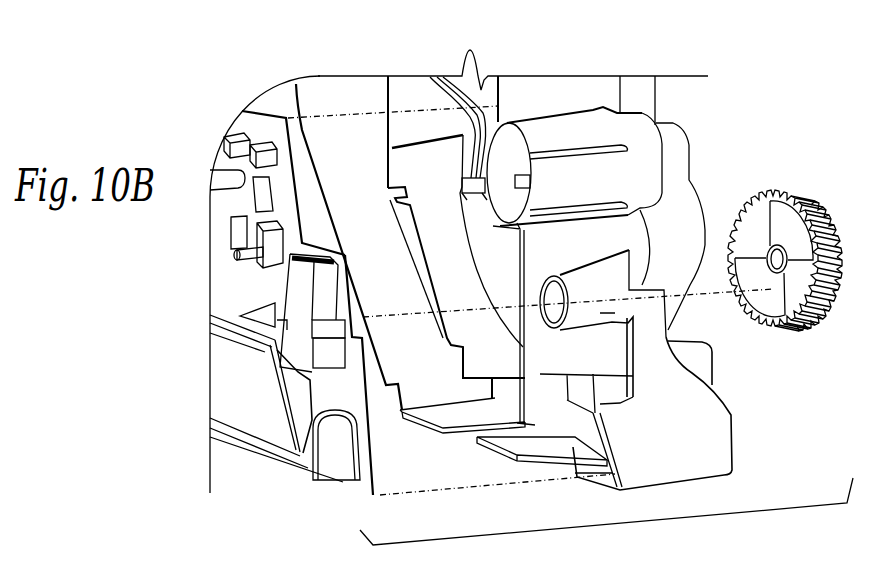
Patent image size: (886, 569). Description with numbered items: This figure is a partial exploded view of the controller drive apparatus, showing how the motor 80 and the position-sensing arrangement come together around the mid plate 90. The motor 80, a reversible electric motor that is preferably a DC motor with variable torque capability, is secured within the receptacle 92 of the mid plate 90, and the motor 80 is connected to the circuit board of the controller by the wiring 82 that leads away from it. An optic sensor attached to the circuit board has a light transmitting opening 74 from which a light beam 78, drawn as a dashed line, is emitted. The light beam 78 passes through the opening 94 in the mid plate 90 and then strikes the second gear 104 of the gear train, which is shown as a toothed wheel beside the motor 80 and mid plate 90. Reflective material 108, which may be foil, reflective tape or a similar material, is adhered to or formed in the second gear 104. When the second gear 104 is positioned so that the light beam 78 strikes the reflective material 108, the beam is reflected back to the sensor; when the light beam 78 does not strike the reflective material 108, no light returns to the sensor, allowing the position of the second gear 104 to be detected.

The light transmitting opening 74 is at (302, 298).
The light beam 78 is at (412, 312).
The motor 80 is at (507, 150).
The wiring 82 is at (438, 108).
The mid plate 90 is at (680, 426).
The receptacle 92 is at (567, 137).
The opening 94 is at (523, 323).
The second gear 104 is at (770, 190).
The reflective material 108 is at (790, 233).